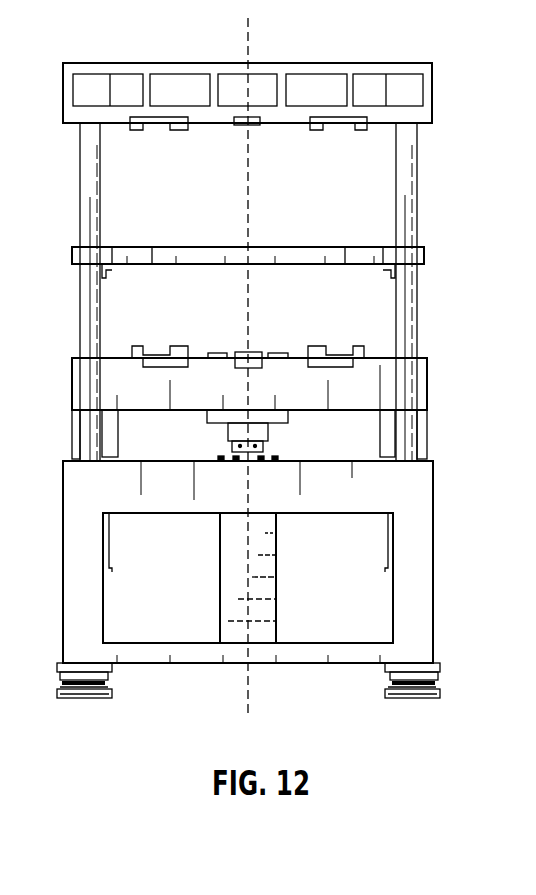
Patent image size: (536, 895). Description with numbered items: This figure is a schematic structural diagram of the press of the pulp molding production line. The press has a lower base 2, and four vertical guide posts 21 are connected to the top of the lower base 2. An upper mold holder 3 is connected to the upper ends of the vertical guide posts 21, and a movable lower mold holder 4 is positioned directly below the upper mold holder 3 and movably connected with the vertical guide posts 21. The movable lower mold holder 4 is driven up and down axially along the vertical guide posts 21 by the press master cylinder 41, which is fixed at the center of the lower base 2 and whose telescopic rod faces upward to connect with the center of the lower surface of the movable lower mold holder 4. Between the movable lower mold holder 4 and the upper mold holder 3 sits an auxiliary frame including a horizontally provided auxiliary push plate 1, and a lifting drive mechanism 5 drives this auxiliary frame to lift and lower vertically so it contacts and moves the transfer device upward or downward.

The auxiliary push plate 1 is at (367, 247).
The lower base 2 is at (413, 522).
The upper mold holder 3 is at (318, 71).
The movable lower mold holder 4 is at (413, 385).
The lifting drive mechanism 5 is at (370, 446).
The vertical guide posts 21 is at (84, 207).
The press master cylinder 41 is at (268, 612).